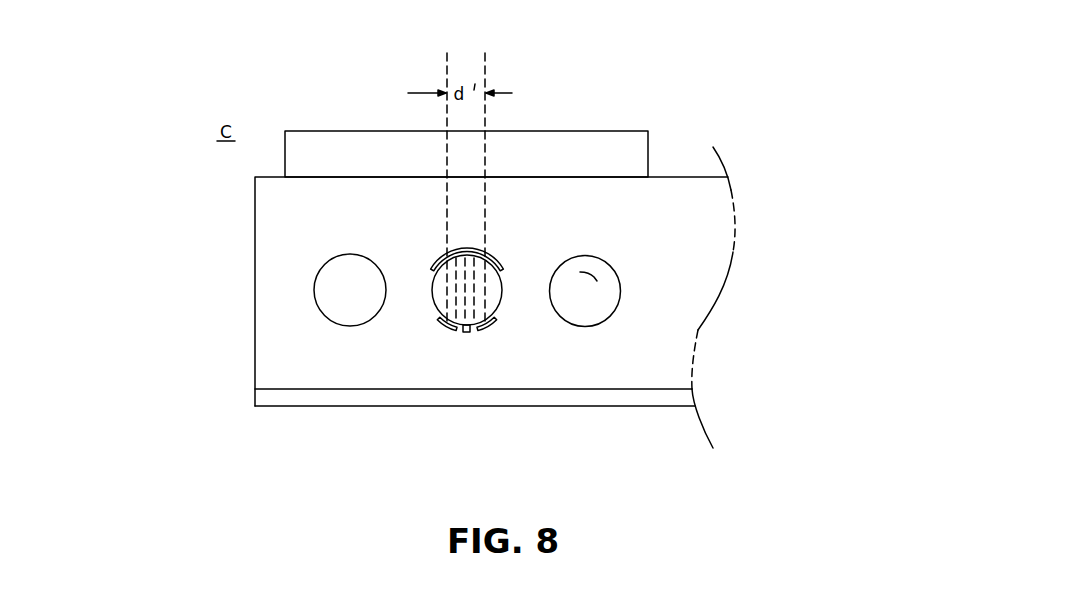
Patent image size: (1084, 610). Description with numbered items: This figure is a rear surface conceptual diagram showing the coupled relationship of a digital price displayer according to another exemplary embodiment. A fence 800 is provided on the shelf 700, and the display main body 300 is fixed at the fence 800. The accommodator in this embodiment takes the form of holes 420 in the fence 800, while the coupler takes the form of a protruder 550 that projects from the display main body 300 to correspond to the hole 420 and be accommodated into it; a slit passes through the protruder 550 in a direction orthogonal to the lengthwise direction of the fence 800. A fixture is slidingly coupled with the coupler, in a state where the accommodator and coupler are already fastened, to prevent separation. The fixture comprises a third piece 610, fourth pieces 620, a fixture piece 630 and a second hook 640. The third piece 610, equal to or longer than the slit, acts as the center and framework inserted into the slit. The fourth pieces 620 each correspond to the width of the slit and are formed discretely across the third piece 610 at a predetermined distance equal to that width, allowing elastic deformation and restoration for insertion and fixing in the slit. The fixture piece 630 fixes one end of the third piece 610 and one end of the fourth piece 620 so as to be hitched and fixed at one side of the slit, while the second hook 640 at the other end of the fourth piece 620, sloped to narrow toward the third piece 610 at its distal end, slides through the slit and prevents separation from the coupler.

The display main body 300 is at (352, 145).
The hole 420 is at (586, 272).
The protruder 550 is at (620, 293).
The third piece 610 is at (467, 332).
The fourth piece 620 is at (445, 300).
The fixture piece 630 is at (504, 268).
The second hook 640 is at (485, 324).
The shelf 700 is at (602, 397).
The fence 800 is at (672, 362).